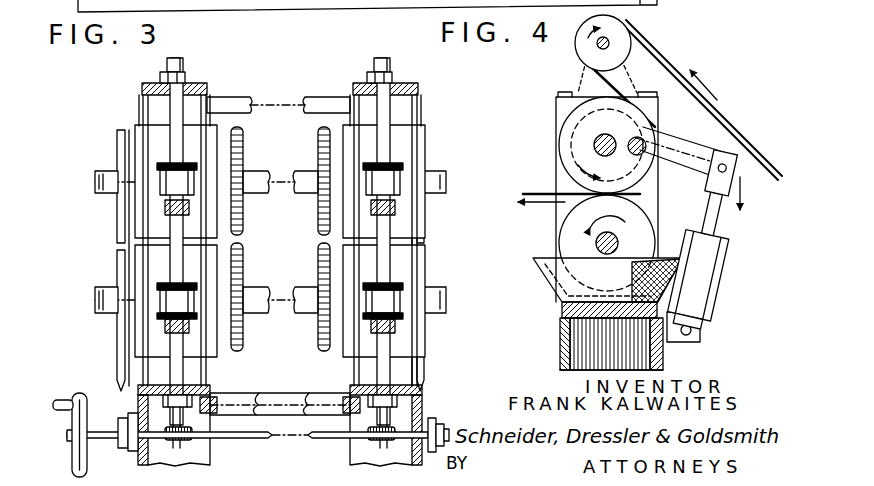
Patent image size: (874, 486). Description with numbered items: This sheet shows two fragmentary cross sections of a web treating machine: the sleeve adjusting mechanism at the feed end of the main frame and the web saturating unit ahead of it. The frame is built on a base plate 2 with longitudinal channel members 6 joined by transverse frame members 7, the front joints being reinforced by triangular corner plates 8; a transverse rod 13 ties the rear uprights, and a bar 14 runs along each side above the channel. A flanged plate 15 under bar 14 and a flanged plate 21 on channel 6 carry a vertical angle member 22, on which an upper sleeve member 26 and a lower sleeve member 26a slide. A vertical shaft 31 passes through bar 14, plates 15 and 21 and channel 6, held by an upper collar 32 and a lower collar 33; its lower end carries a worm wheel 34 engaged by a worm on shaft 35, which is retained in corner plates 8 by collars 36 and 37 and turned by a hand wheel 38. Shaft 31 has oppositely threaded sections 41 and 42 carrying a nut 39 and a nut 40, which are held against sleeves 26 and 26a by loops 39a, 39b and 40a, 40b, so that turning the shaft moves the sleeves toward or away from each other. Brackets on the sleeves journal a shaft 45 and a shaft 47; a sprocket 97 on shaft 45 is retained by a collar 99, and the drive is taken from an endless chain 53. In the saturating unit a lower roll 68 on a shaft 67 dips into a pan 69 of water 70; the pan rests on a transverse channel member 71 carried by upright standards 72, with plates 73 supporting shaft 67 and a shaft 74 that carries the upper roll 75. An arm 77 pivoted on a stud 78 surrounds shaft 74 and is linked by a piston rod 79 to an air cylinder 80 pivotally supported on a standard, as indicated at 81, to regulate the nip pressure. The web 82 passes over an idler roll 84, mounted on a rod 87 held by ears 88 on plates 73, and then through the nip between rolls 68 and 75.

In FIG. 3, the base plate 2 is at (324, 0).
In FIG. 3, the longitudinal frame members 6 is at (143, 398).
In FIG. 3, the transverse frame members 7 is at (266, 393).
In FIG. 3, the triangular corner plates 8 is at (143, 456).
In FIG. 3, the transverse rod 13 is at (237, 100).
In FIG. 3, the bar 14 is at (152, 84).
In FIG. 3, the flanged plate 15 is at (141, 93).
In FIG. 3, the flanged plate 21 is at (216, 391).
In FIG. 3, the angle member 22 is at (150, 117).
In FIG. 3, the upper sleeve member 26 is at (133, 147).
In FIG. 3, the lower sleeve member 26a is at (133, 270).
In FIG. 3, the vertical shaft 31 is at (172, 104).
In FIG. 3, the collar 32 is at (186, 76).
In FIG. 3, the collar 33 is at (420, 382).
In FIG. 3, the worm wheel 34 is at (192, 441).
In FIG. 3, the shaft 35 is at (312, 440).
In FIG. 3, the collar 36 is at (441, 428).
In FIG. 3, the collar 37 is at (124, 430).
In FIG. 3, the hand wheel 38 is at (78, 455).
In FIG. 3, the nut 39 is at (168, 200).
In FIG. 3, the loop 39a is at (163, 168).
In FIG. 3, the loop 39b is at (243, 205).
In FIG. 3, the nut 40 is at (172, 322).
In FIG. 3, the loop 40a is at (168, 291).
In FIG. 3, the loop 40b is at (383, 320).
In FIG. 3, the threaded section 41 is at (175, 208).
In FIG. 3, the threaded section 42 is at (180, 328).
In FIG. 3, the shaft 45 is at (97, 181).
In FIG. 3, the shaft 47 is at (100, 305).
In FIG. 3, the endless chain 53 is at (126, 248).
In FIG. 3, the sprocket 97 is at (318, 226).
In FIG. 3, the collar 99 is at (318, 200).
In FIG. 4, the shaft 67 is at (596, 243).
In FIG. 4, the roll 68 is at (575, 225).
In FIG. 4, the pan 69 is at (570, 288).
In FIG. 4, the water 70 is at (662, 275).
In FIG. 4, the transverse channel member 71 is at (565, 323).
In FIG. 4, the upright standards 72 is at (565, 355).
In FIG. 4, the plates 73 is at (560, 178).
In FIG. 4, the shaft 74 is at (594, 145).
In FIG. 4, the upper roll 75 is at (572, 120).
In FIG. 4, the arm 77 is at (700, 150).
In FIG. 4, the stud 78 is at (642, 143).
In FIG. 4, the piston rod 79 is at (735, 205).
In FIG. 4, the air cylinder 80 is at (708, 265).
In FIG. 4, the pivotal support 81 is at (676, 343).
In FIG. 4, the web 82 is at (528, 183).
In FIG. 4, the idler roll 84 is at (624, 31).
In FIG. 4, the rod 87 is at (610, 43).
In FIG. 4, the ears 88 is at (588, 78).